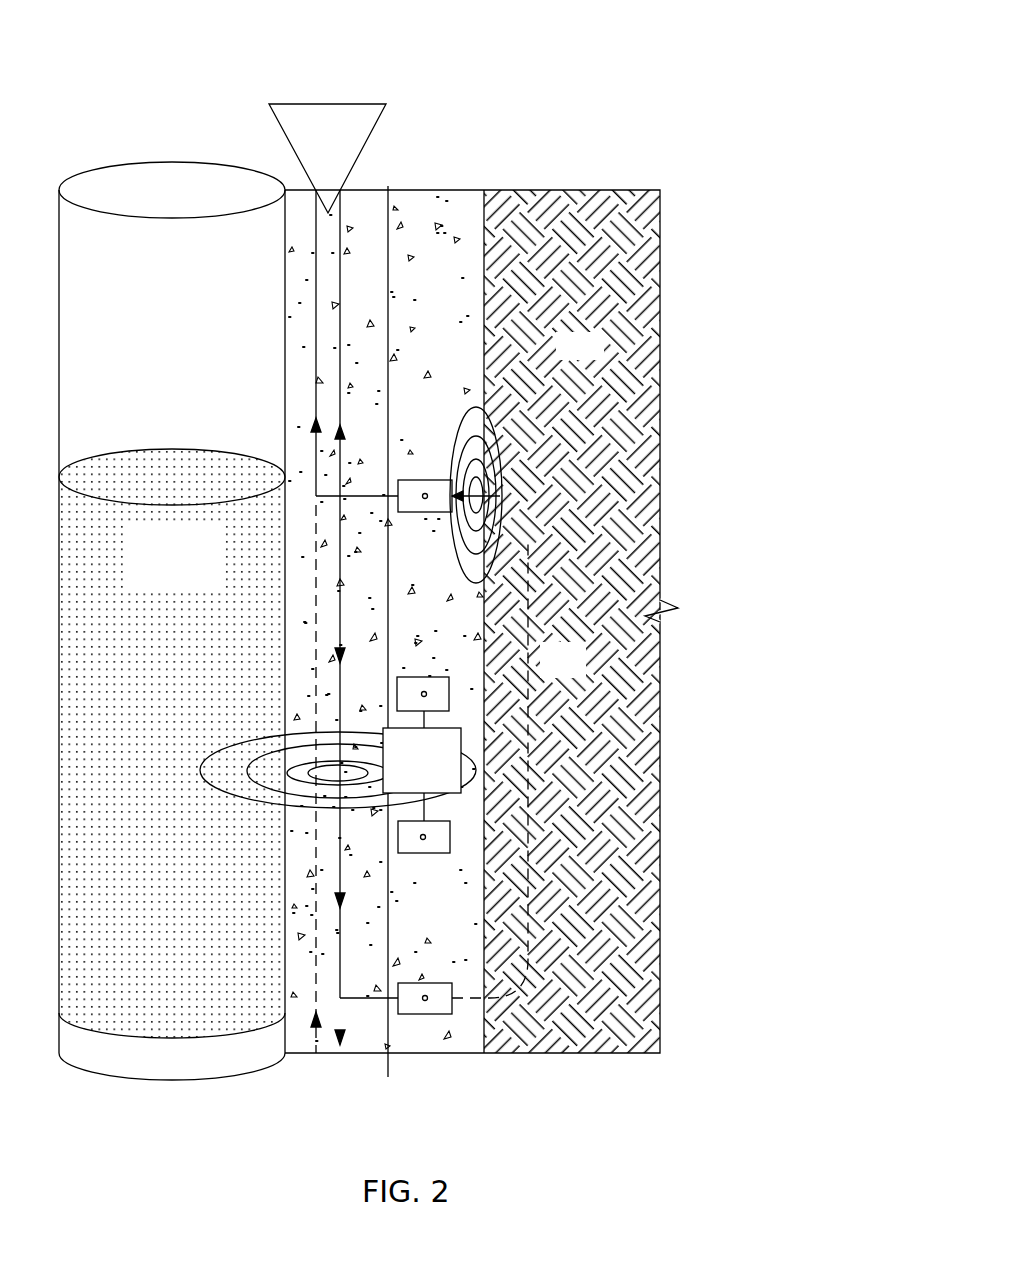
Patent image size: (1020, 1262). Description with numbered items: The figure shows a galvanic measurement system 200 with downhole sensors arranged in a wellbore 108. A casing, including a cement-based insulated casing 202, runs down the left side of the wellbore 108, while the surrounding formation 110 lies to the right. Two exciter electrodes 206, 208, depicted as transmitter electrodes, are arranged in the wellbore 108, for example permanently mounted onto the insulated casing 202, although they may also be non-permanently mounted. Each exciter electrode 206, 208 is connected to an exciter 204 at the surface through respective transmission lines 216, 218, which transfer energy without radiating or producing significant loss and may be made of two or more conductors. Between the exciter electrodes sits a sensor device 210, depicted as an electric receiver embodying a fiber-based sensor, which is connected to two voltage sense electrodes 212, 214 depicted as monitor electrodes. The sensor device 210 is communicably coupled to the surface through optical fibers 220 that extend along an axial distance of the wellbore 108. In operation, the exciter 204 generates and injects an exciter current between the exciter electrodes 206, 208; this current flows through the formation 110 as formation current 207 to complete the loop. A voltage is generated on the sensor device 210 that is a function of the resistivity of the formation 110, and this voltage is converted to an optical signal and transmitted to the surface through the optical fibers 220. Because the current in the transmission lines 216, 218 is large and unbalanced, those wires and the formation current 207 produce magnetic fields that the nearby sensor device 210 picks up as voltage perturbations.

The galvanic measurement system 200 is at (675, 55).
The insulated casing 202 is at (92, 168).
The exciter 204 is at (347, 143).
The transmission line 216 is at (317, 223).
The transmission line 218 is at (340, 245).
The wellbore 108 is at (451, 287).
The optical fibers 220 is at (404, 356).
The formation 110 is at (598, 357).
The exciter electrode 208 is at (415, 478).
The formation current 207 is at (517, 513).
The voltage sense electrode 212 is at (415, 677).
The sensor device 210 is at (227, 750).
The voltage sense electrode 214 is at (462, 828).
The exciter electrode 206 is at (417, 983).